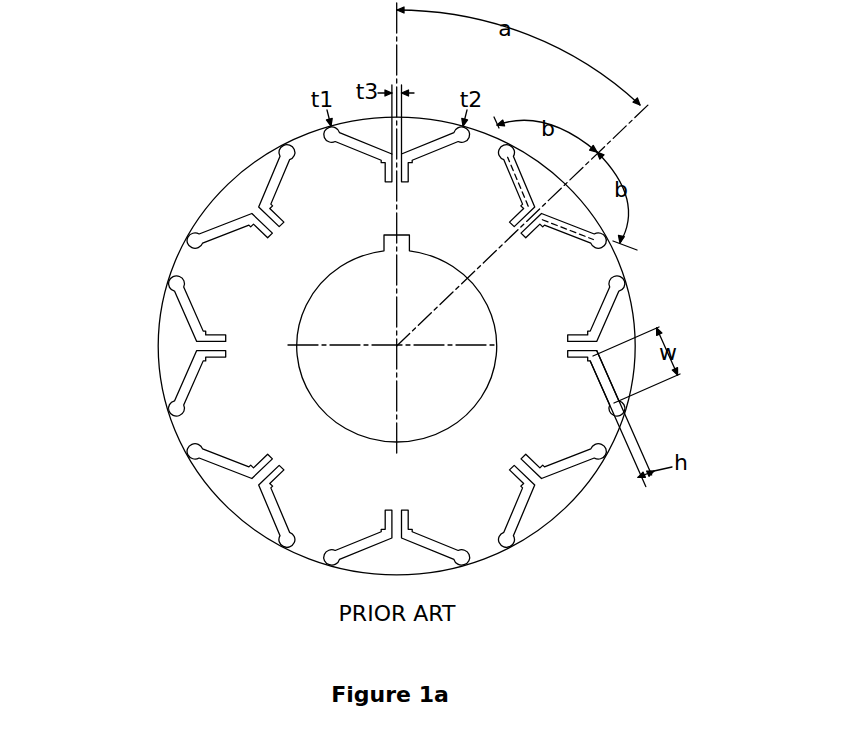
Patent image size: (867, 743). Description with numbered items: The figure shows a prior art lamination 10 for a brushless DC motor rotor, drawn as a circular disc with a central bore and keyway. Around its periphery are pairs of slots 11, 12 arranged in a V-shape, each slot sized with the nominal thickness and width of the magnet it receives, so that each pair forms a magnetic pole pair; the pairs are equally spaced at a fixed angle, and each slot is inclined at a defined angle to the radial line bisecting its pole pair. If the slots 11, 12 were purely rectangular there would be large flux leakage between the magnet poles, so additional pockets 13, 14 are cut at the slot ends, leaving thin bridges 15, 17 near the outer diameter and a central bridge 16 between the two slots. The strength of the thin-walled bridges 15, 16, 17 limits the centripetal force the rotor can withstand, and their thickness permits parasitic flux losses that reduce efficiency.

The lamination 10 is at (203, 517).
The slot 11 is at (275, 177).
The slot 12 is at (236, 223).
The pocket 13 is at (180, 281).
The pocket 14 is at (178, 415).
The bridge 15 is at (465, 130).
The bridge 16 is at (395, 153).
The bridge 17 is at (395, 153).